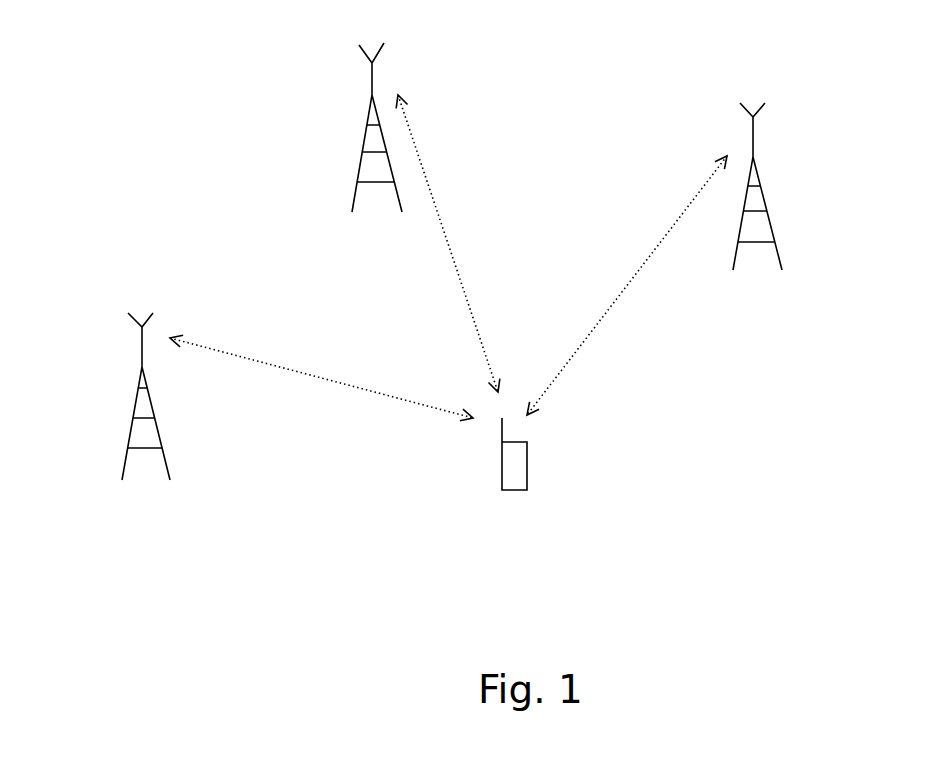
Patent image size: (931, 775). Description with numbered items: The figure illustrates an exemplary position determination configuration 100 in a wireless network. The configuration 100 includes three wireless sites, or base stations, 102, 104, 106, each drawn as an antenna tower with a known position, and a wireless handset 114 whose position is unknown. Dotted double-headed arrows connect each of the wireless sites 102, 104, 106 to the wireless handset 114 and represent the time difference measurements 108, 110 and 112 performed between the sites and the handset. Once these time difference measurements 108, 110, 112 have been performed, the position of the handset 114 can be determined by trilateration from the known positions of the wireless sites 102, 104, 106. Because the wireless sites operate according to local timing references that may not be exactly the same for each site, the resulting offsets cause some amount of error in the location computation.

The position determination configuration 100 is at (176, 72).
The wireless site 102 is at (143, 382).
The wireless site 104 is at (375, 140).
The wireless site 106 is at (757, 170).
The time difference measurement 108 is at (321, 368).
The time difference measurement 110 is at (448, 243).
The time difference measurement 112 is at (627, 285).
The wireless handset 114 is at (525, 465).